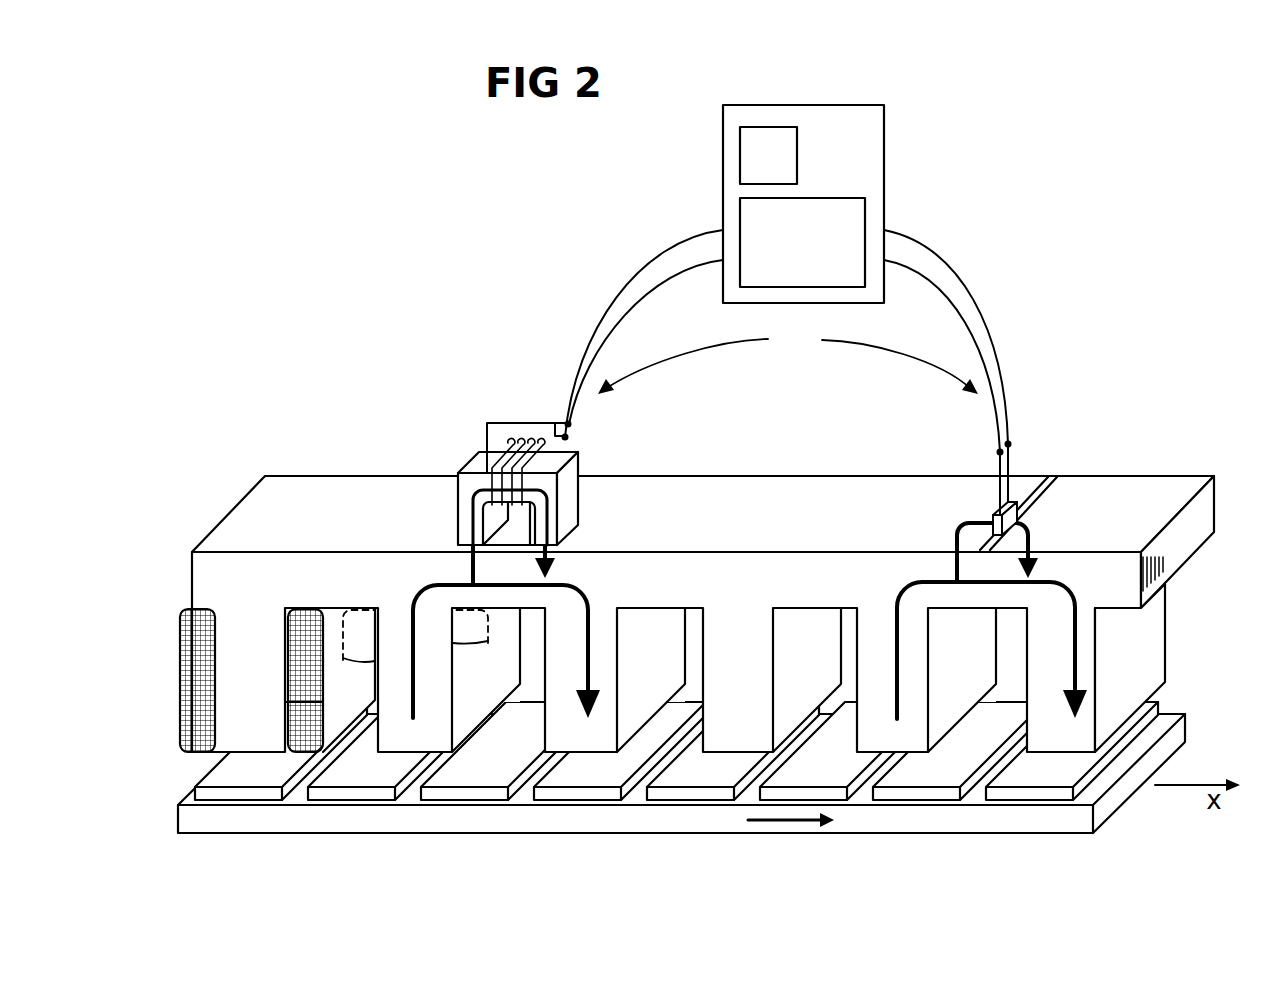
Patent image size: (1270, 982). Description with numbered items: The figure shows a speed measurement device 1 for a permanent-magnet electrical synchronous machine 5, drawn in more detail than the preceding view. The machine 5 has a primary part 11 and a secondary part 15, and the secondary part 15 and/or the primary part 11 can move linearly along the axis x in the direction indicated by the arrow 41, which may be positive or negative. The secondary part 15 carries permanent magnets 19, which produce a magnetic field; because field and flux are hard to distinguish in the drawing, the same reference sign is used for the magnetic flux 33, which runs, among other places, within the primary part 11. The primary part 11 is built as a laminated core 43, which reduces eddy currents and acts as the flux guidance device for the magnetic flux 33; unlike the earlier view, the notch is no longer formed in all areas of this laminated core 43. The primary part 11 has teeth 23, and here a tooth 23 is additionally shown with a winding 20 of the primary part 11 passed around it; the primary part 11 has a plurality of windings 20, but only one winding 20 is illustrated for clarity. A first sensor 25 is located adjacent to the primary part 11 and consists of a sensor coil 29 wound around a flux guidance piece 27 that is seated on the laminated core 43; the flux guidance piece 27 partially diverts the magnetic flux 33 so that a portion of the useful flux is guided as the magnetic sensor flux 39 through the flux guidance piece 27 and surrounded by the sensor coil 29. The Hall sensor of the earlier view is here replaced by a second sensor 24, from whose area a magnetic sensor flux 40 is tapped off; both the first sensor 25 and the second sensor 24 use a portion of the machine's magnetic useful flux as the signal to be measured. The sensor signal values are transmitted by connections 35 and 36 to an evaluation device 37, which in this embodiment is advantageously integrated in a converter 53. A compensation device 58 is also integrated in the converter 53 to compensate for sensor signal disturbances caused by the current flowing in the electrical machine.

The speed measurement device 1 is at (787, 355).
The permanent-magnet electrical synchronous machine 5 is at (280, 340).
The primary part 11 is at (662, 651).
The secondary part 15 is at (1113, 806).
The permanent magnets 19 is at (235, 795).
The winding 20 is at (190, 662).
The tooth 23 is at (245, 700).
The second sensor 24 is at (985, 504).
The first sensor 25 is at (460, 426).
The flux guidance piece 27 is at (463, 488).
The sensor coil 29 is at (525, 482).
The magnetic flux 33 is at (413, 697).
The connection 35 is at (554, 412).
The connection 36 is at (1028, 433).
The evaluation device 37 is at (866, 212).
The magnetic sensor flux 39 is at (472, 562).
The magnetic sensor flux 40 is at (1030, 535).
The arrow 41 is at (797, 826).
The laminated core 43 is at (238, 522).
The converter 53 is at (808, 204).
The compensation device 58 is at (747, 153).